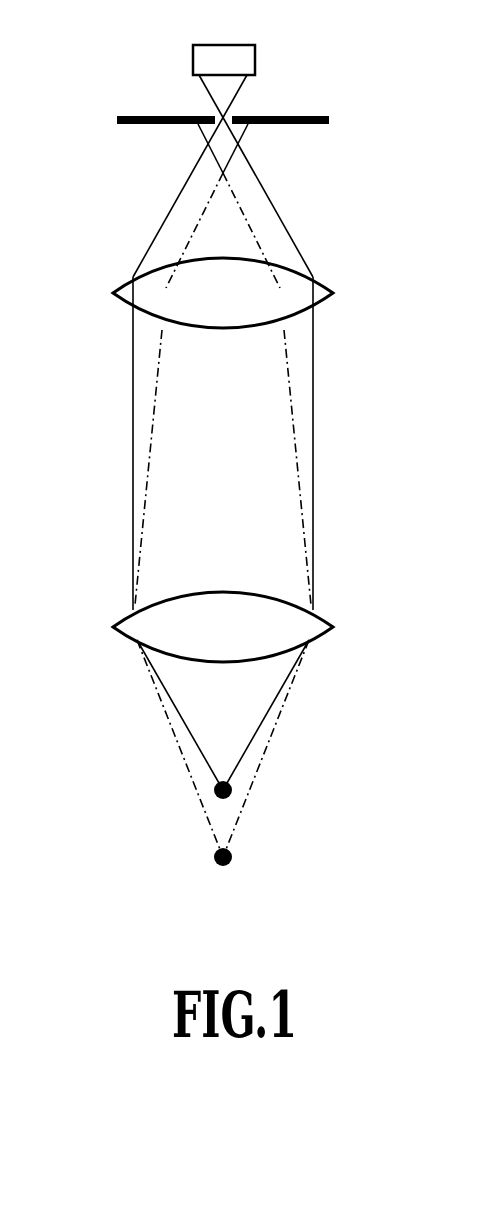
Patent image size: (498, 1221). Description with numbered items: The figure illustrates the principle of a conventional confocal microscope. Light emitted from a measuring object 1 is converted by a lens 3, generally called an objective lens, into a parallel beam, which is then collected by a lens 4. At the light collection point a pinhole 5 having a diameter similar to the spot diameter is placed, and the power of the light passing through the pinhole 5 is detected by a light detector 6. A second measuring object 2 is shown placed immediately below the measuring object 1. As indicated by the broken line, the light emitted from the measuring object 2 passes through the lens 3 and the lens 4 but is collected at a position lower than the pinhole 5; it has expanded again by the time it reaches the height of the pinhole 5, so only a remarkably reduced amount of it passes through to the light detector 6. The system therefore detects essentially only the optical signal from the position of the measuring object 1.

The measuring object 1 is at (232, 786).
The measuring object 2 is at (232, 853).
The lens 3 is at (127, 619).
The lens 4 is at (127, 285).
The pinhole 5 is at (217, 108).
The light detector 6 is at (257, 53).